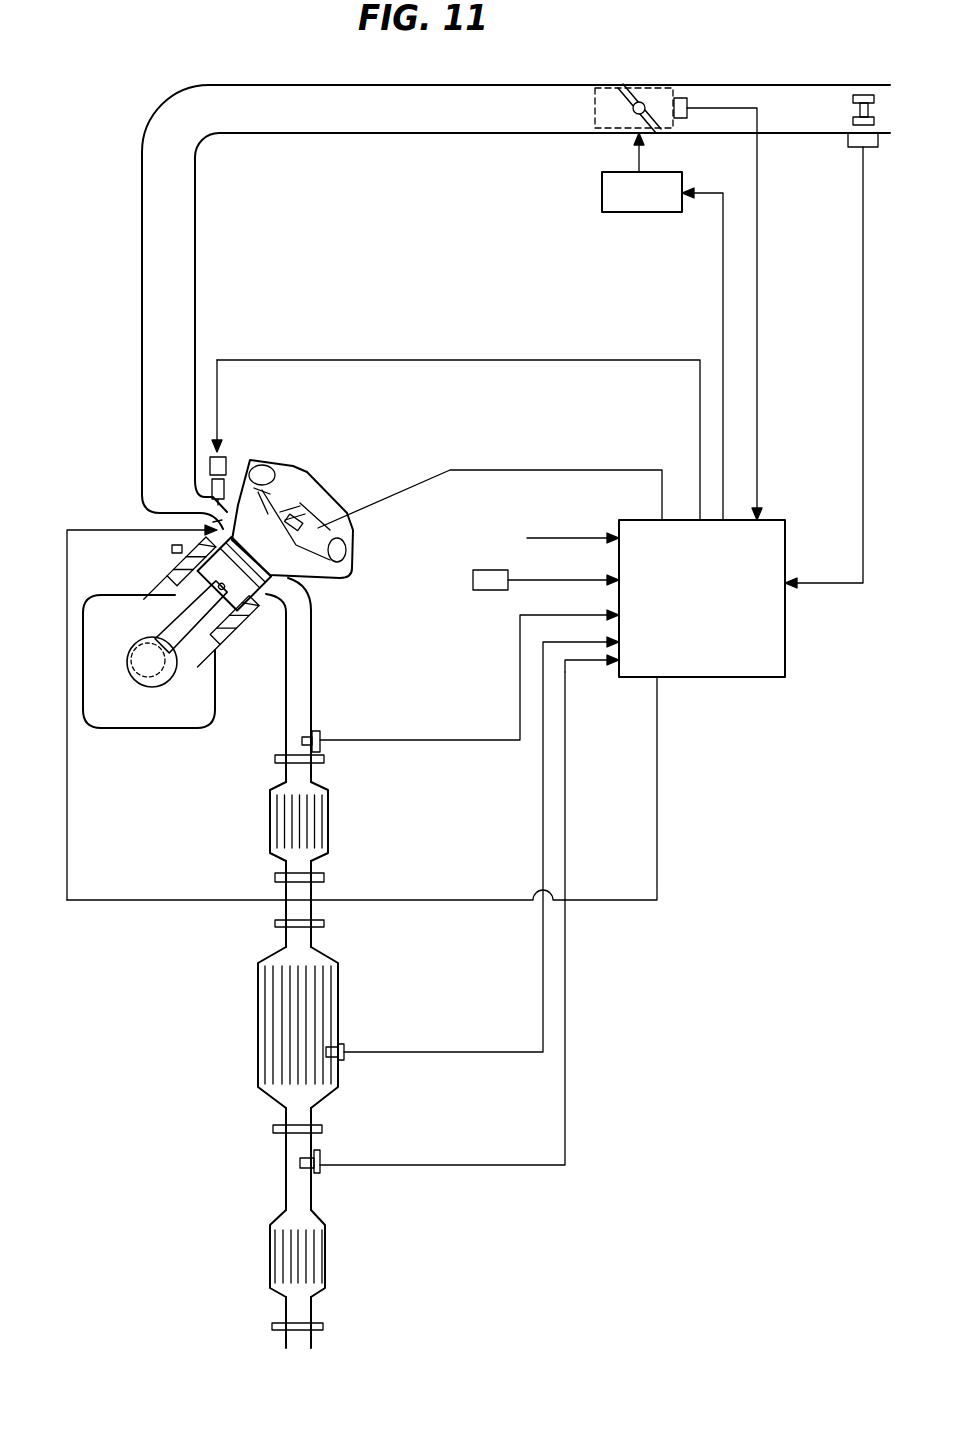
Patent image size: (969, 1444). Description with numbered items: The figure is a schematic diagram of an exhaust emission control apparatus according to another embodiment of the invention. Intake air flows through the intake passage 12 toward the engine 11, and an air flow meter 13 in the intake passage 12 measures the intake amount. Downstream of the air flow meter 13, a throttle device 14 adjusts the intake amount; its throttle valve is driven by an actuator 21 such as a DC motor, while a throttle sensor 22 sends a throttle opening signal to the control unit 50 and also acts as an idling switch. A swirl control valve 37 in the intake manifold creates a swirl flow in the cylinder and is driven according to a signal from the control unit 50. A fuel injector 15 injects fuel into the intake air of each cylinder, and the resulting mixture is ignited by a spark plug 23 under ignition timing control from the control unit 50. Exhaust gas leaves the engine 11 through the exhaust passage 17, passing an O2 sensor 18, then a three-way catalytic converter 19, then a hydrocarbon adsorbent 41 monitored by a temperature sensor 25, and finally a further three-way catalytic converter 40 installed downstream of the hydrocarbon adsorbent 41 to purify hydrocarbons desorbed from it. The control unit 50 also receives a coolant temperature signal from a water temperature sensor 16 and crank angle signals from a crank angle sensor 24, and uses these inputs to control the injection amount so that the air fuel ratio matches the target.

The engine 11 is at (331, 475).
The intake passage 12 is at (142, 210).
The air flow meter 13 is at (872, 148).
The throttle device 14 is at (639, 88).
The fuel injector 15 is at (228, 460).
The water temperature sensor 16 is at (172, 549).
The exhaust passage 17 is at (282, 652).
The O2 sensor 18 is at (322, 748).
The three-way catalytic converter 19 is at (328, 827).
The actuator 21 is at (648, 213).
The throttle sensor 22 is at (674, 95).
The spark plug 23 is at (316, 510).
The crank angle sensor 24 is at (490, 592).
The temperature sensor 25 is at (344, 1062).
The swirl control valve 37 is at (215, 522).
The three-way catalytic converter 40 is at (326, 1255).
The hydrocarbon adsorbent 41 is at (340, 1016).
The control unit 50 is at (786, 625).